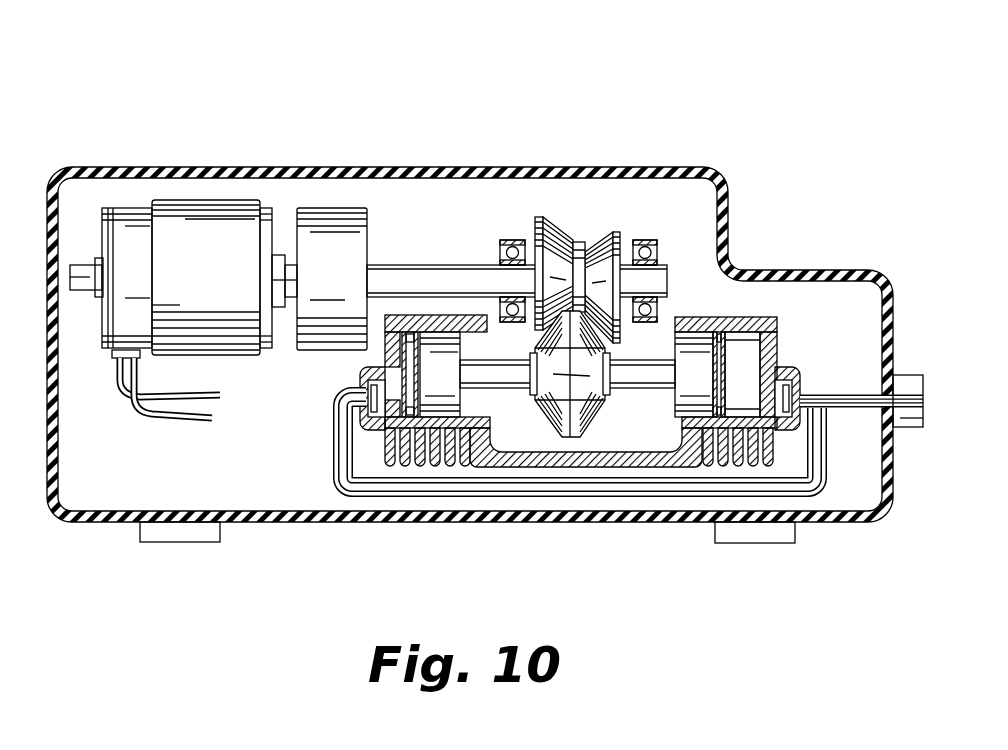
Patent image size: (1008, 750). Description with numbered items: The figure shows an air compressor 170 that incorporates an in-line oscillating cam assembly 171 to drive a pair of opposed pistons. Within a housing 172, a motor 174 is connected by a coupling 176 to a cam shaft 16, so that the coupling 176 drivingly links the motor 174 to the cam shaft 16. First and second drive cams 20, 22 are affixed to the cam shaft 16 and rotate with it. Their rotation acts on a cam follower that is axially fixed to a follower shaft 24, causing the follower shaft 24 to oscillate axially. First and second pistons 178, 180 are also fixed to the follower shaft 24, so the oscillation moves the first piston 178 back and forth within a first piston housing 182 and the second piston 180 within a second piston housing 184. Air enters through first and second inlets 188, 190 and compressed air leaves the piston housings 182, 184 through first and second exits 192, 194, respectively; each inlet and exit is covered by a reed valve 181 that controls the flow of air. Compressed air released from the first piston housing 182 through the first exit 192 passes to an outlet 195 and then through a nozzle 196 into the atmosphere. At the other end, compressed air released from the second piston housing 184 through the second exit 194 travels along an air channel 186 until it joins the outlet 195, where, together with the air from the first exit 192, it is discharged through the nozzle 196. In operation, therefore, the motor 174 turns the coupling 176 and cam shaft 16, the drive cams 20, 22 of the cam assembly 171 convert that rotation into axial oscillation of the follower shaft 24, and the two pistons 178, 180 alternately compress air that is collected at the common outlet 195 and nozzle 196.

The air compressor 170 is at (289, 98).
The housing 172 is at (393, 170).
The motor 174 is at (228, 200).
The coupling 176 is at (342, 208).
The cam shaft 16 is at (660, 277).
The drive cam 20 is at (538, 233).
The drive cam 22 is at (590, 252).
The in-line oscillating cam assembly 171 is at (582, 232).
The follower shaft 24 is at (495, 372).
The first piston 178 is at (443, 407).
The second piston 180 is at (688, 400).
The reed valve 181 is at (410, 332).
The first piston housing 182 is at (445, 317).
The second piston housing 184 is at (703, 317).
The air channel 186 is at (573, 470).
The first inlet 188 is at (775, 353).
The second inlet 190 is at (395, 350).
The first exit 192 is at (780, 405).
The second exit 194 is at (398, 393).
The outlet 195 is at (870, 400).
The nozzle 196 is at (908, 428).